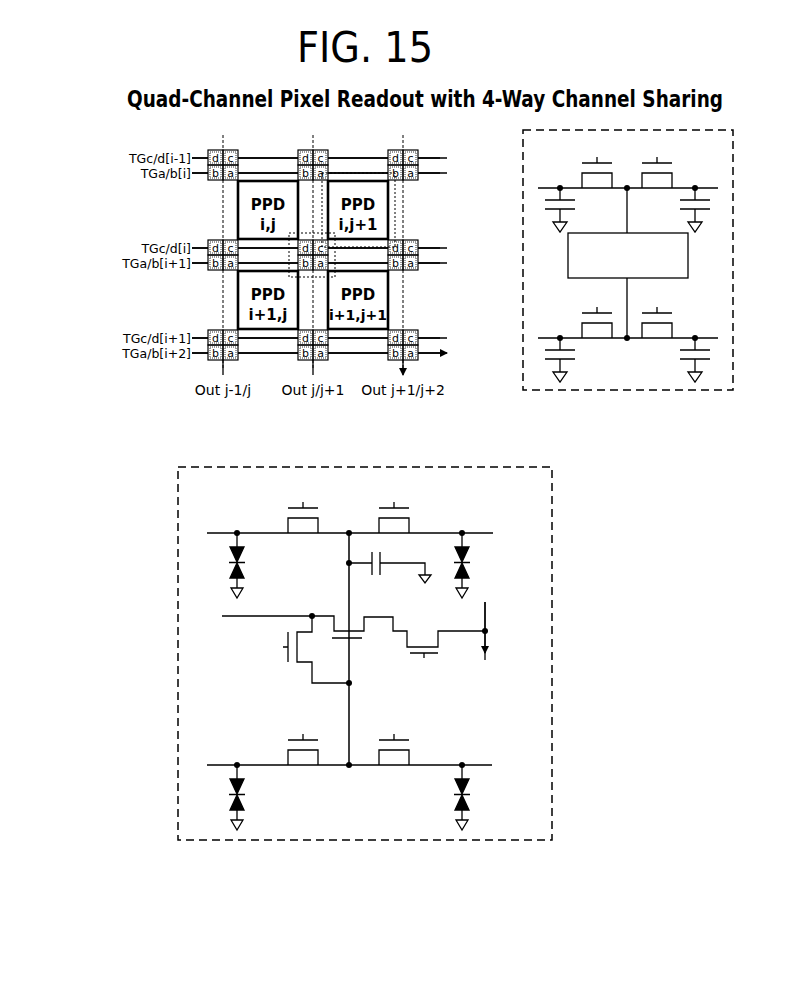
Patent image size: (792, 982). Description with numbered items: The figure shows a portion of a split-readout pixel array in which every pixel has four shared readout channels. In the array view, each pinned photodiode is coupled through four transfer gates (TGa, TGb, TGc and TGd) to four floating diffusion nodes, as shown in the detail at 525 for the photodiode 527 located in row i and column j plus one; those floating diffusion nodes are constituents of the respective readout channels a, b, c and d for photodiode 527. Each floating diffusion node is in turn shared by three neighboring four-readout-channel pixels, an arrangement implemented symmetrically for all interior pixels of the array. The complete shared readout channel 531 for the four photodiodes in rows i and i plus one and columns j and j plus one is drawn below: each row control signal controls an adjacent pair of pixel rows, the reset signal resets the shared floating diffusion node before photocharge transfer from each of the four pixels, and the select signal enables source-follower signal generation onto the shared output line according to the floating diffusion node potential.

The four floating diffusion nodes coupled to a photodiode 525 is at (523, 210).
The photodiode 527 is at (577, 253).
The shared readout channel 531 is at (305, 278).